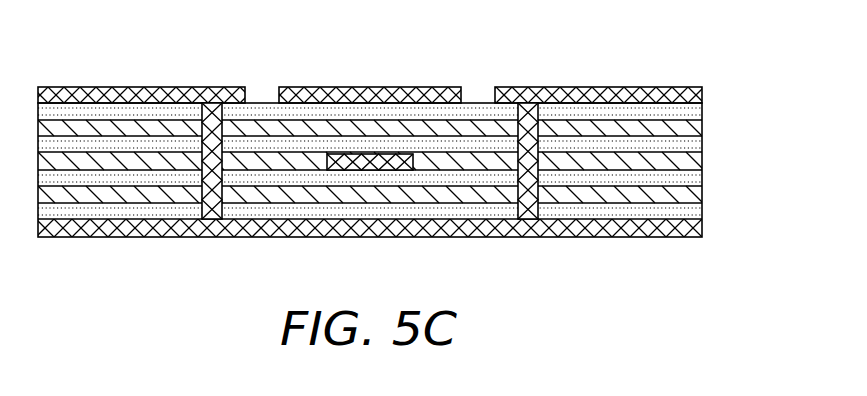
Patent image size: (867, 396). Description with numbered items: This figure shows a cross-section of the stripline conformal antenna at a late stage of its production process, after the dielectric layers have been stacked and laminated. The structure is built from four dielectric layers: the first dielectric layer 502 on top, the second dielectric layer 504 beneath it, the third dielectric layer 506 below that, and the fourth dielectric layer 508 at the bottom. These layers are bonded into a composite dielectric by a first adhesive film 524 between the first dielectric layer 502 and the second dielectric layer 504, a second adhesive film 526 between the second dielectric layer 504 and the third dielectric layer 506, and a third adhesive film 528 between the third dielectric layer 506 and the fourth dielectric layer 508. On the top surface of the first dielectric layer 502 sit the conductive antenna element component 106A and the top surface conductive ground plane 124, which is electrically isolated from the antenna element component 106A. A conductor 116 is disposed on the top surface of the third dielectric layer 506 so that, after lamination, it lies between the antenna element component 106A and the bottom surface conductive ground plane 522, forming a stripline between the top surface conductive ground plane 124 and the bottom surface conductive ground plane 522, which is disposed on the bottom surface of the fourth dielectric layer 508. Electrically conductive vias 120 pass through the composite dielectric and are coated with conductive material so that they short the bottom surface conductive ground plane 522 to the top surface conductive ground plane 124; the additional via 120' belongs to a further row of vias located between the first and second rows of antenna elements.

The first dielectric layer 502 is at (702, 97).
The first adhesive film 524 is at (702, 120).
The second dielectric layer 504 is at (702, 138).
The second adhesive film 526 is at (702, 161).
The third dielectric layer 506 is at (702, 180).
The fourth dielectric layer 508 is at (702, 206).
The third adhesive film 528 is at (672, 200).
The bottom surface conductive ground plane 522 is at (702, 232).
The top surface conductive ground plane 124 is at (167, 87).
The conductive antenna element component 106A is at (415, 87).
The conductor 116 is at (363, 158).
The electrically conductive via 120 is at (209, 193).
The additional via 120' is at (528, 193).